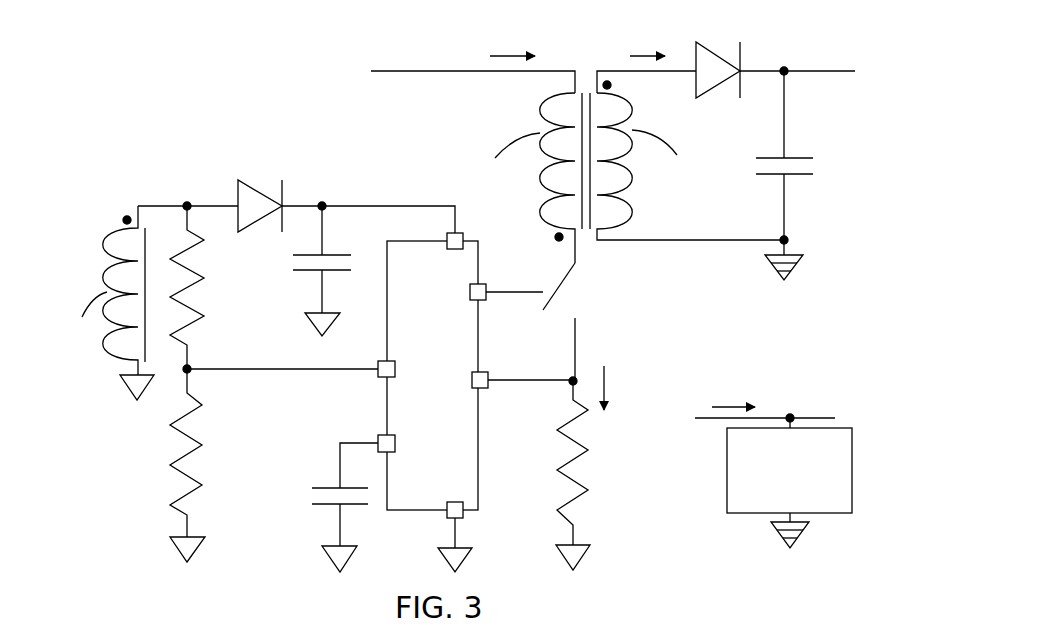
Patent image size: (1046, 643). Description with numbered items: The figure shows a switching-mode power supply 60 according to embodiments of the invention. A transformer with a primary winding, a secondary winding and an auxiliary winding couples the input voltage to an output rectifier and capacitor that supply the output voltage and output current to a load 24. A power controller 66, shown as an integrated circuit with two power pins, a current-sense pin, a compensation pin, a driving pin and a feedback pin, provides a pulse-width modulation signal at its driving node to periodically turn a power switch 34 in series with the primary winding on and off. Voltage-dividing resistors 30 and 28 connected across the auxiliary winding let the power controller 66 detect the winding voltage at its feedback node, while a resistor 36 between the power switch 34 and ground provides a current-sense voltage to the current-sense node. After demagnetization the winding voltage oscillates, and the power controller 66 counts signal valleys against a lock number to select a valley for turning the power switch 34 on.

The switching-mode power supply 60 is at (330, 72).
The voltage-dividing resistor 30 is at (202, 327).
The voltage-dividing resistor 28 is at (200, 433).
The power controller 66 is at (447, 341).
The power switch 34 is at (580, 292).
The current sense resistor 36 is at (590, 438).
The load 24 is at (803, 490).